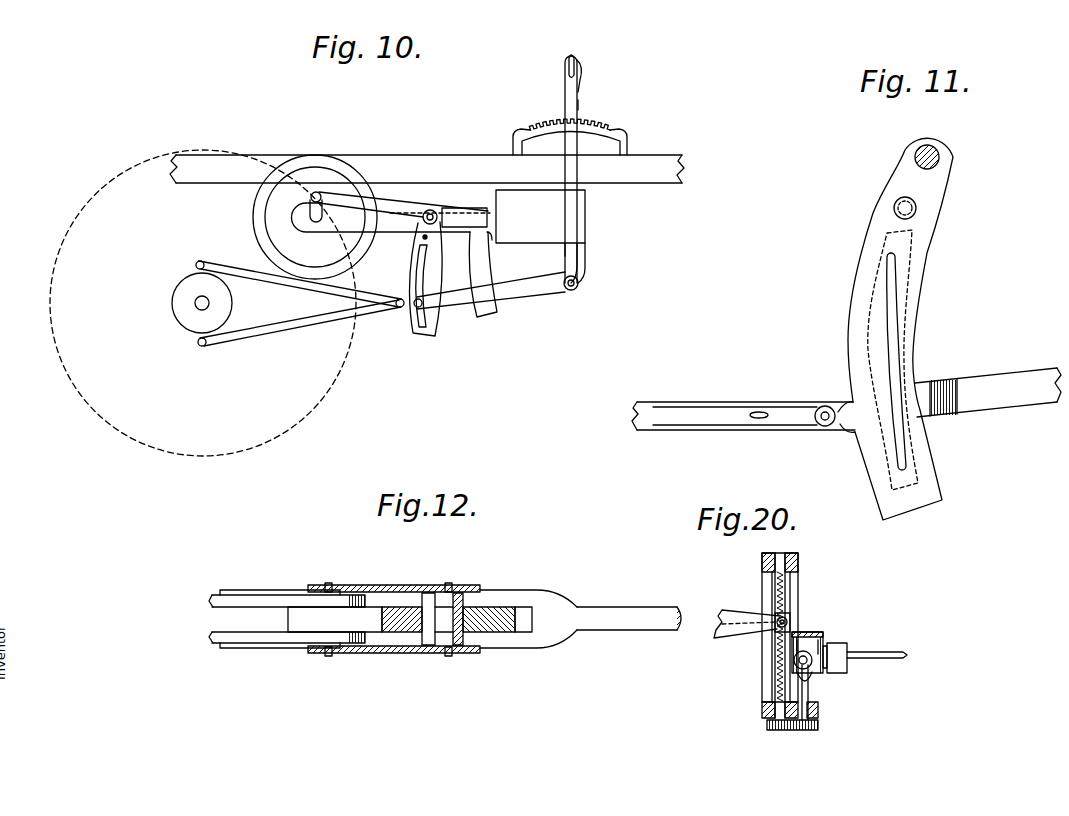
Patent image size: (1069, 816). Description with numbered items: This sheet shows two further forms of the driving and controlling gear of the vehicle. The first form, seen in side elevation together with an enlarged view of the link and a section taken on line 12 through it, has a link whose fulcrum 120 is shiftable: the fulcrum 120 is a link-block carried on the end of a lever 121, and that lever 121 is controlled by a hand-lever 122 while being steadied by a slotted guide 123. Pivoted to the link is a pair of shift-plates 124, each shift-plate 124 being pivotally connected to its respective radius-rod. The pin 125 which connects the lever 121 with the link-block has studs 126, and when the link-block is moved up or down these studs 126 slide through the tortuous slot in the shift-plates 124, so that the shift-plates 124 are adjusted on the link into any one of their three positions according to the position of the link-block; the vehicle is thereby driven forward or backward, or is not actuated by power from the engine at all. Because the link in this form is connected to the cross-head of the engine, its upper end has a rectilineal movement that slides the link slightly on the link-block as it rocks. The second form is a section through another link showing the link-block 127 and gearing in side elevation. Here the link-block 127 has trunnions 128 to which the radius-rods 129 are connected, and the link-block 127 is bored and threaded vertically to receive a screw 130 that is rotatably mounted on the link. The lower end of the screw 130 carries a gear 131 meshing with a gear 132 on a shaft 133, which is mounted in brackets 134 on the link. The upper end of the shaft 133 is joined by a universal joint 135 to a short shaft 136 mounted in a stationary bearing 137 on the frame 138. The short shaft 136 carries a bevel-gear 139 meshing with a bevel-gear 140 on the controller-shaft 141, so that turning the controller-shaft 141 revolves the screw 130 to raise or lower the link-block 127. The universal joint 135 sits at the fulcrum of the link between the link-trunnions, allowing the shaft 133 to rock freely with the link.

In FIG. 11, the section line X12-X12 12 is at (967, 360).
In FIG. 10, the fulcrum 120 is at (418, 313).
In FIG. 12, the fulcrum 120 is at (487, 587).
In FIG. 10, the lever 121 is at (533, 290).
In FIG. 12, the lever 121 is at (610, 623).
In FIG. 10, the hand-lever 122 is at (578, 108).
In FIG. 10, the slotted guide 123 is at (470, 317).
In FIG. 11, the shift-plate 124 is at (893, 285).
In FIG. 12, the shift-plate 124 is at (387, 655).
In FIG. 12, the pin 125 is at (457, 630).
In FIG. 12, the studs 126 is at (445, 655).
In FIG. 20, the link-block 127 is at (787, 618).
In FIG. 20, the trunnions 128 is at (790, 623).
In FIG. 20, the radius-rods 129 is at (723, 613).
In FIG. 20, the screw 130 is at (775, 693).
In FIG. 20, the gear 131 is at (767, 730).
In FIG. 20, the gear 132 is at (803, 730).
In FIG. 20, the shaft 133 is at (812, 697).
In FIG. 20, the brackets 134 is at (818, 712).
In FIG. 20, the universal joint 135 is at (800, 660).
In FIG. 20, the short shaft 136 is at (824, 647).
In FIG. 20, the stationary bearing 137 is at (790, 647).
In FIG. 20, the frame 138 is at (850, 670).
In FIG. 20, the bevel-gear 139 is at (810, 632).
In FIG. 20, the bevel-gear 140 is at (820, 667).
In FIG. 20, the controller-shaft 141 is at (873, 655).